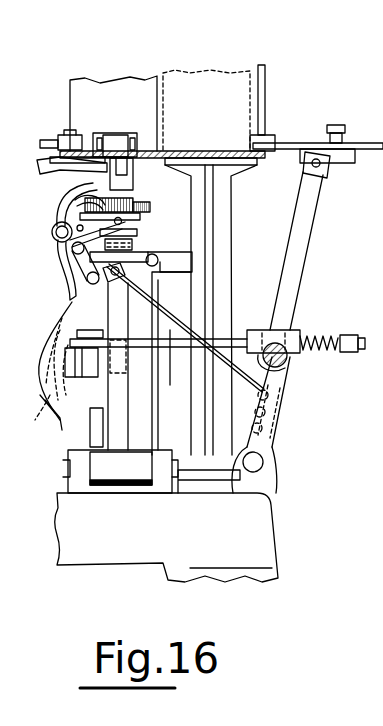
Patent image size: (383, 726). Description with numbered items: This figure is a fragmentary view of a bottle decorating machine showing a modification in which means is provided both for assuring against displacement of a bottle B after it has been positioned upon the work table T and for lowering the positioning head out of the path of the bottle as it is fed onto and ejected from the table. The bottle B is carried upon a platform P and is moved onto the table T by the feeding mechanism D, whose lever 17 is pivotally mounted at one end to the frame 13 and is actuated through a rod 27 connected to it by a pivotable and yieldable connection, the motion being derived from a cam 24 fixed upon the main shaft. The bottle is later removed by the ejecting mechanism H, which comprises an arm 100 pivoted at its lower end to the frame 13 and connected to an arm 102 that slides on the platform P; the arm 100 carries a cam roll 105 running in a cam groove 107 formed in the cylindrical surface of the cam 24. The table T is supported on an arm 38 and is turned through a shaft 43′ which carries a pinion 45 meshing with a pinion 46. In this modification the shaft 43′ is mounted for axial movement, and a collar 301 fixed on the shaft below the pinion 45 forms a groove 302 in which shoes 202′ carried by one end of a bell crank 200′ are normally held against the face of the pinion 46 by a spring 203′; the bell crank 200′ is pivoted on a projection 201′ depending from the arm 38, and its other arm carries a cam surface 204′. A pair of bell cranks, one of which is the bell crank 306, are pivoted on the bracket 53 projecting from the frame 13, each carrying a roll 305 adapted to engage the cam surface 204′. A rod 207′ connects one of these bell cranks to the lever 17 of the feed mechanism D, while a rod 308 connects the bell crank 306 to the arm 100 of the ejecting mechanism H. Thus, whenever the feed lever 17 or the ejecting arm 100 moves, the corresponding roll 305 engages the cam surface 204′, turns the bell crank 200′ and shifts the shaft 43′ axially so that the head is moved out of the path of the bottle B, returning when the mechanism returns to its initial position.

The bottle B is at (106, 97).
The bottle ejecting mechanism H is at (93, 124).
The work table T is at (88, 152).
The arm 38 is at (47, 158).
The arm 102 is at (116, 138).
The platform P is at (213, 145).
The feeding mechanism D is at (320, 141).
The arm 100 is at (133, 183).
The pinion 45 is at (133, 198).
The pinion 46 is at (150, 208).
The spring 203′ is at (77, 198).
The projection 201′ is at (60, 217).
The bell crank 200′ is at (60, 245).
The roll 305 is at (70, 262).
The cam surface 204′ is at (67, 276).
The bell crank 306 is at (85, 285).
The groove 302 is at (137, 230).
The collar 301 is at (132, 246).
The shaft 43′ is at (157, 262).
The shoes 202′ is at (150, 219).
The bracket 53 is at (155, 300).
The rod 207′ is at (172, 318).
The lever 17 is at (300, 253).
The rod 27 is at (175, 343).
The cam 24 is at (45, 379).
The cam roll 105 is at (62, 317).
The cam groove 107 is at (58, 400).
The rod 308 is at (93, 400).
The frame 13 is at (257, 548).